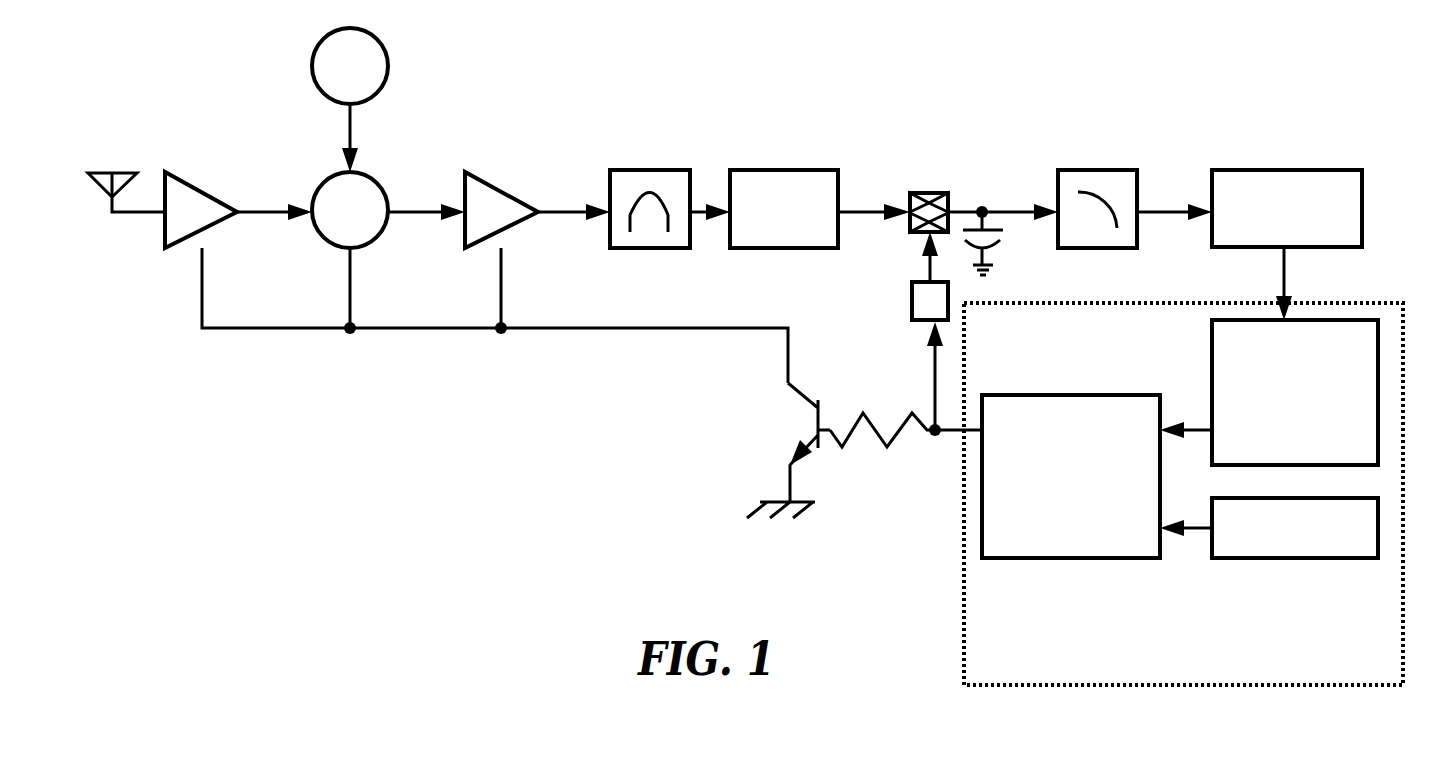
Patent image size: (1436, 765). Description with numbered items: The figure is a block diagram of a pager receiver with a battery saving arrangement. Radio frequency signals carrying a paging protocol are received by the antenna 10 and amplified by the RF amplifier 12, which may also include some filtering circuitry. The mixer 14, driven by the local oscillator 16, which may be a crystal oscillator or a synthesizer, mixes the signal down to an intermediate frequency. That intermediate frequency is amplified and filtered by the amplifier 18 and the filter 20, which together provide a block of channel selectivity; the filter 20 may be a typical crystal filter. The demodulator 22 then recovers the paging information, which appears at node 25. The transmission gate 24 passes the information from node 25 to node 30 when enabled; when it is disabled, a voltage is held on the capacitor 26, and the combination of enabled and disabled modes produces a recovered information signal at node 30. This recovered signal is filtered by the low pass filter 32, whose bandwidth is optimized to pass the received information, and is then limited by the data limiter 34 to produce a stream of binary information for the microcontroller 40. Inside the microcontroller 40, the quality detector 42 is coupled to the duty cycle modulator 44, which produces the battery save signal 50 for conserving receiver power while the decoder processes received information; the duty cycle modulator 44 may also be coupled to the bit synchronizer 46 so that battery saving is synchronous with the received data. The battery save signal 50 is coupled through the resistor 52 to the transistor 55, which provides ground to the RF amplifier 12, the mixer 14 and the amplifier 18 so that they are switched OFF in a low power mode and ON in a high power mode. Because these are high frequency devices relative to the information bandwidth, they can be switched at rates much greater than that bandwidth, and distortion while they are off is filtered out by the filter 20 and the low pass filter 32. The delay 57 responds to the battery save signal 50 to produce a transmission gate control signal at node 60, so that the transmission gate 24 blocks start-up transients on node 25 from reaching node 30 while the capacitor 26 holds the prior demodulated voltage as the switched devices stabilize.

The antenna 10 is at (118, 172).
The RF amplifier 12 is at (193, 187).
The mixer 14 is at (372, 176).
The local oscillator 16 is at (382, 42).
The amplifier 18 is at (490, 182).
The filter 20 is at (636, 170).
The demodulator 22 is at (790, 170).
The transmission gate 24 is at (915, 195).
The node 25 is at (847, 210).
The capacitor 26 is at (1007, 232).
The node 30 is at (967, 210).
The low pass filter 32 is at (1095, 170).
The data limiter 34 is at (1248, 170).
The microcontroller 40 is at (1318, 302).
The quality detector 42 is at (1207, 390).
The duty cycle modulator 44 is at (1017, 558).
The bit synchronizer 46 is at (1235, 558).
The battery save signal 50 is at (948, 437).
The resistor 52 is at (847, 453).
The transistor 55 is at (783, 390).
The delay 57 is at (905, 315).
The node 60 is at (915, 240).